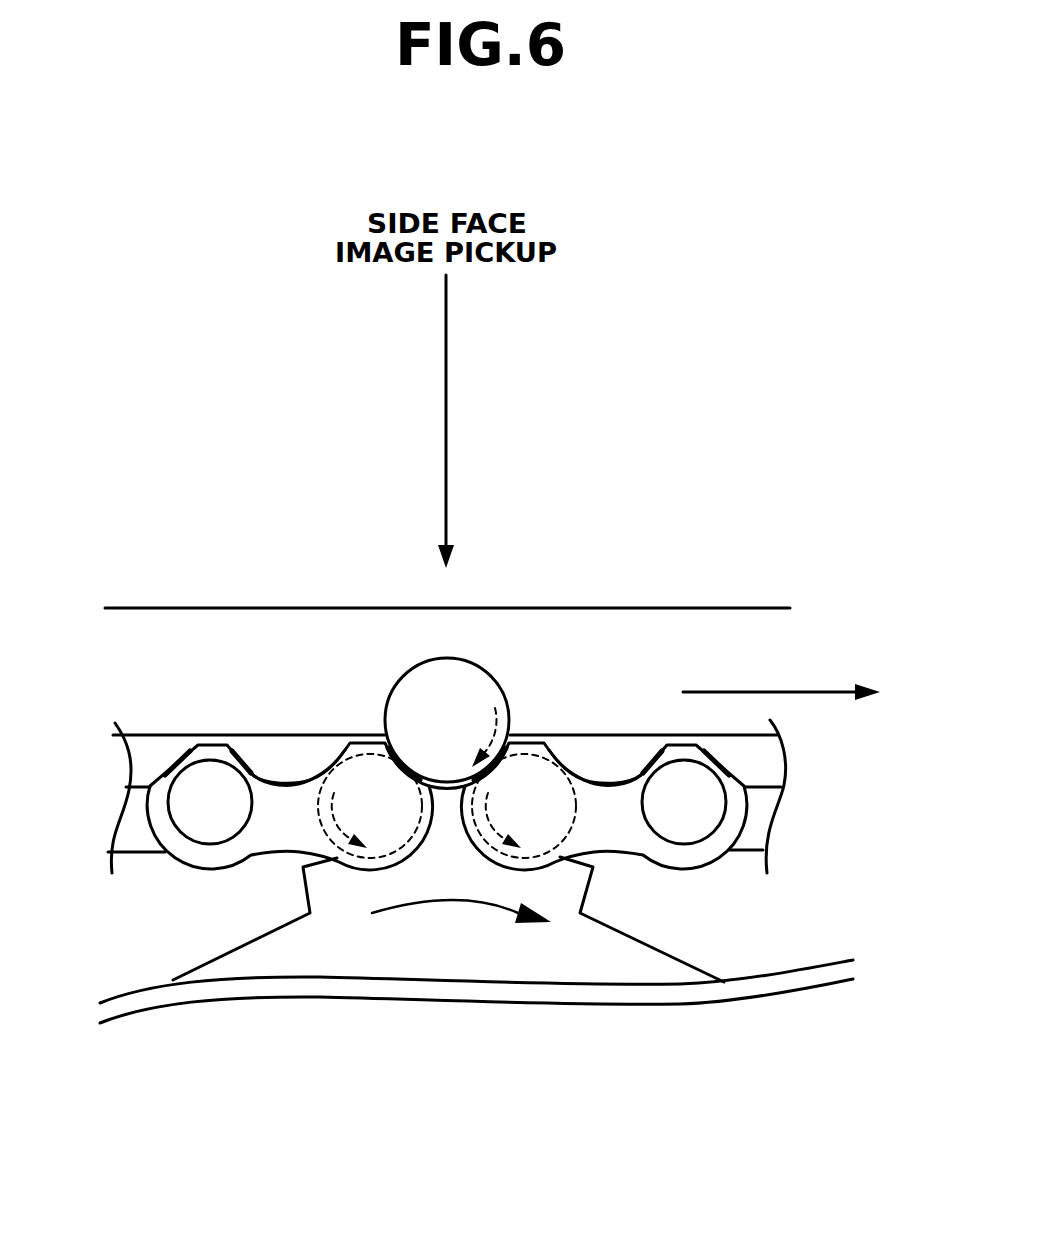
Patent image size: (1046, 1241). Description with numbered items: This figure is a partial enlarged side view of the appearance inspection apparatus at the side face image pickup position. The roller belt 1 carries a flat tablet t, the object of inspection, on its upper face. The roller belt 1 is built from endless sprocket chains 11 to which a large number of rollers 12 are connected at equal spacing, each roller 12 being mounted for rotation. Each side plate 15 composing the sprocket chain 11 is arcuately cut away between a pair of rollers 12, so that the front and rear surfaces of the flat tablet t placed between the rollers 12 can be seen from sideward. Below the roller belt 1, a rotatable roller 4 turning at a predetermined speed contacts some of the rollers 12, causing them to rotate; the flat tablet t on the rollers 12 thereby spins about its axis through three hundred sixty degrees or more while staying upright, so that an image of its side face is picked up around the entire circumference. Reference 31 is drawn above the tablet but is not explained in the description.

The roller belt 1 is at (178, 896).
The rotatable roller 4 is at (460, 933).
The endless sprocket chain 11 is at (700, 870).
The roller 12 is at (318, 820).
The side plate 15 is at (277, 833).
The image pickup reference line 31 is at (163, 643).
The flat tablet t is at (462, 700).